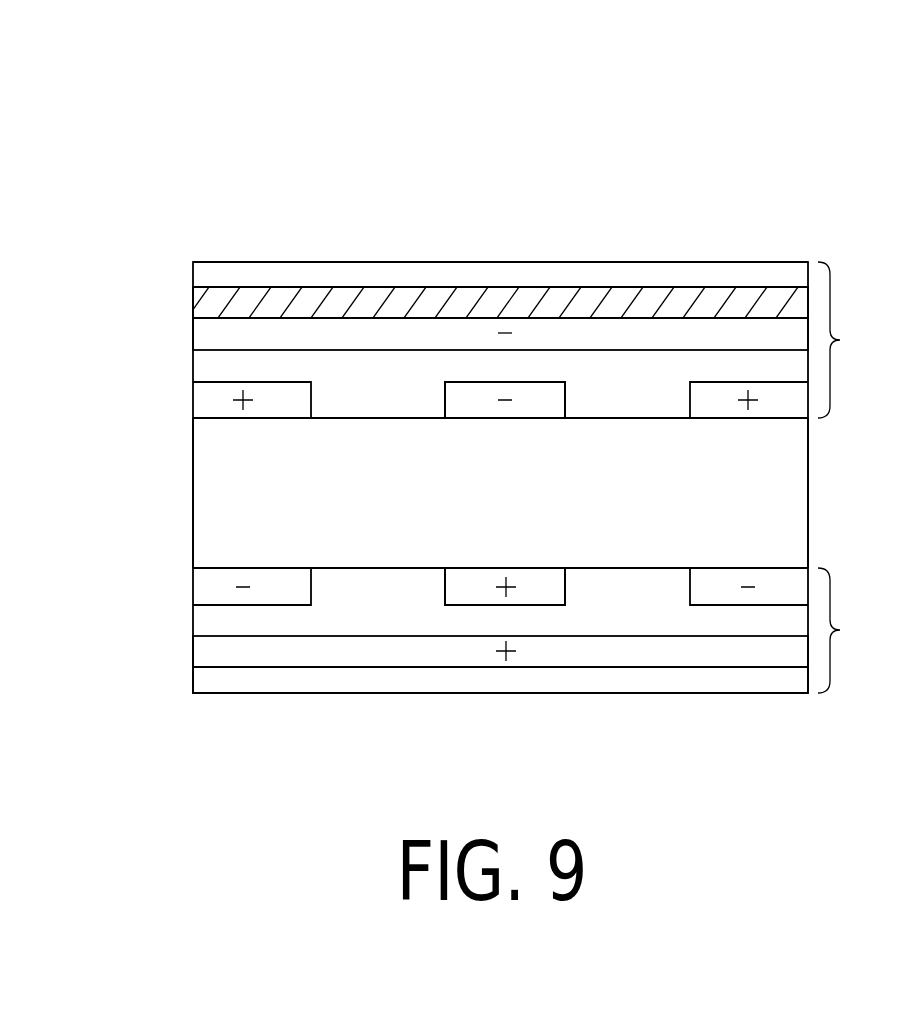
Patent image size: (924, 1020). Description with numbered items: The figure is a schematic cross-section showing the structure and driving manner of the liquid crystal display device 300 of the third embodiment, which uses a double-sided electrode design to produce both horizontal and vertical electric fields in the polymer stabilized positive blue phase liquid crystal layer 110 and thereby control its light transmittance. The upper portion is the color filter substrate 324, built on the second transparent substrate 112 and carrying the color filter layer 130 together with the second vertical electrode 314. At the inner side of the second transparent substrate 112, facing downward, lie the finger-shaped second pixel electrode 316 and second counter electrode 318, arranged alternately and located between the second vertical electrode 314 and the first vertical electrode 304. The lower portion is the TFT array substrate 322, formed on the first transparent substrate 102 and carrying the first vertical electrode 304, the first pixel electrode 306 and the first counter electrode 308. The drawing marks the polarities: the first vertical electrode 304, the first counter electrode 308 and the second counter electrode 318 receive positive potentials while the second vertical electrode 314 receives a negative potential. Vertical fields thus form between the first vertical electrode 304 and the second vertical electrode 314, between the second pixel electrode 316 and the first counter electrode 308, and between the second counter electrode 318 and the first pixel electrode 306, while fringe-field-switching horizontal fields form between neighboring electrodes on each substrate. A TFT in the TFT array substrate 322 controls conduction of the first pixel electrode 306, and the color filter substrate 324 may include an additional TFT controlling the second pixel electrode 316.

The liquid crystal display device 300 is at (772, 133).
The second transparent substrate 112 is at (193, 270).
The color filter layer 130 is at (213, 308).
The second vertical electrode 314 is at (193, 333).
The second counter electrode 318 is at (193, 398).
The second pixel electrode 316 is at (480, 393).
The liquid crystal layer 110 is at (195, 492).
The first pixel electrode 306 is at (198, 587).
The first counter electrode 308 is at (480, 592).
The first vertical electrode 304 is at (198, 648).
The first transparent substrate 102 is at (198, 682).
The color filter substrate 324 is at (856, 340).
The TFT array substrate 322 is at (857, 630).